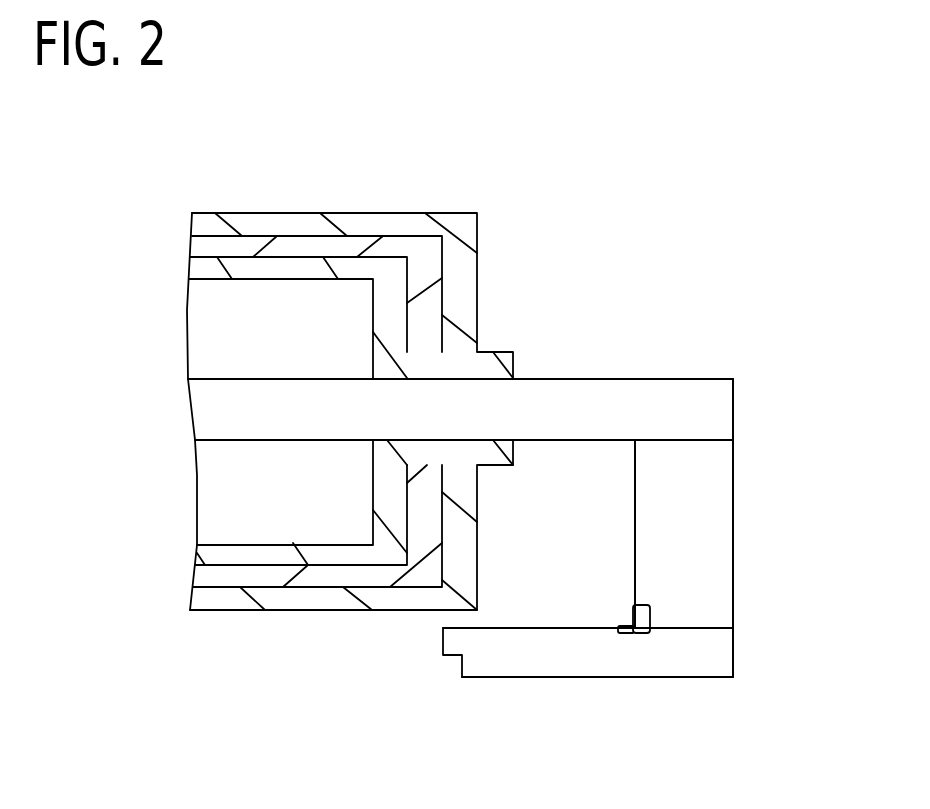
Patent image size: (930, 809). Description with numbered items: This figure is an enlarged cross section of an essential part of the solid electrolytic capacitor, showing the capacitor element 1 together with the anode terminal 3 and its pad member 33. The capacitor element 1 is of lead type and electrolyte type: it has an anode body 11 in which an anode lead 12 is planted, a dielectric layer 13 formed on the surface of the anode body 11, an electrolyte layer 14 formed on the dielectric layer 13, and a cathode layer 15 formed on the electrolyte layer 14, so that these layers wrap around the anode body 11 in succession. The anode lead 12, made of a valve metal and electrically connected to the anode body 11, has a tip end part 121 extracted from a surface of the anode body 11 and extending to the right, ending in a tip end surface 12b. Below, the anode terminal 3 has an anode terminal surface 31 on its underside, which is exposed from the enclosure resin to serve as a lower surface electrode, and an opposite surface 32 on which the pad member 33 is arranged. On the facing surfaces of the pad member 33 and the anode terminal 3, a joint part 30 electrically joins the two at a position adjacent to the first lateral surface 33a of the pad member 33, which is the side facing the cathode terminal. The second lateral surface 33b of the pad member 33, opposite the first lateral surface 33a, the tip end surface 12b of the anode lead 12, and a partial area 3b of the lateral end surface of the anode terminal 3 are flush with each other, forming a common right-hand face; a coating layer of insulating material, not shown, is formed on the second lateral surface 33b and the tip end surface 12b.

The capacitor element 1 is at (202, 210).
The anode body 11 is at (220, 345).
The anode lead 12 is at (220, 412).
The tip end part 121 is at (642, 377).
The tip end surface 12b is at (733, 410).
The dielectric layer 13 is at (203, 270).
The electrolyte layer 14 is at (203, 245).
The cathode layer 15 is at (203, 222).
The anode terminal 3 is at (510, 655).
The joint part 30 is at (642, 620).
The anode terminal surface 31 is at (603, 677).
The surface 32 is at (518, 628).
The pad member 33 is at (705, 537).
The first lateral surface 33a is at (635, 489).
The second lateral surface 33b is at (733, 480).
The partial area of lateral end surface 3b is at (733, 653).